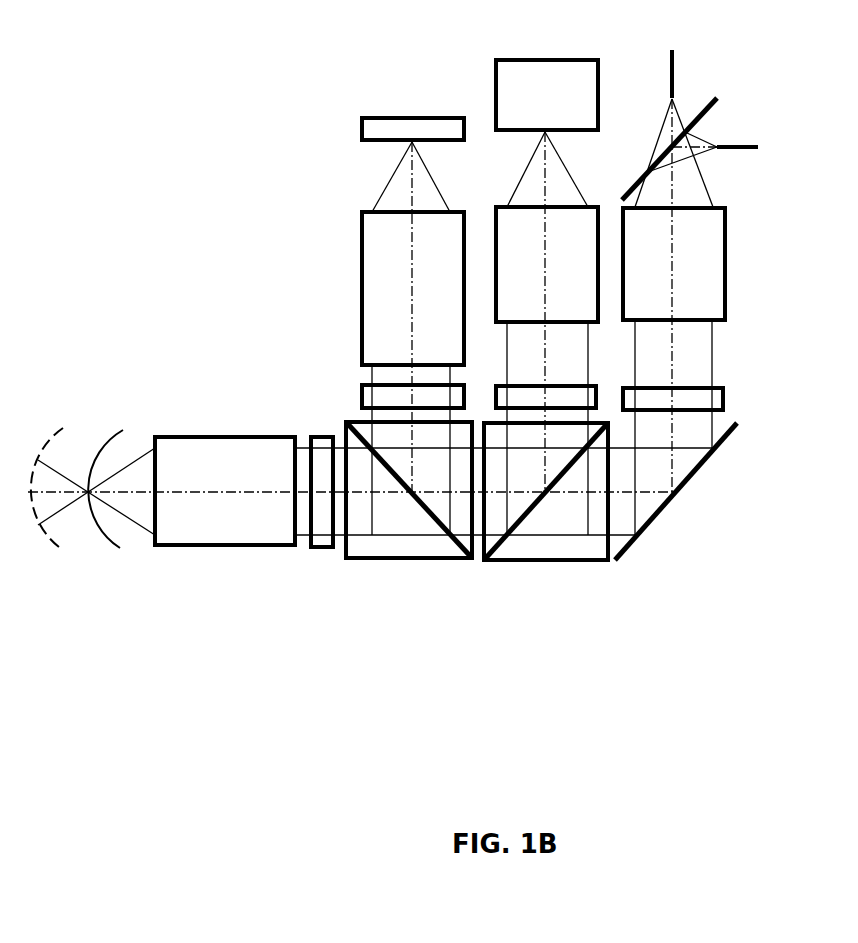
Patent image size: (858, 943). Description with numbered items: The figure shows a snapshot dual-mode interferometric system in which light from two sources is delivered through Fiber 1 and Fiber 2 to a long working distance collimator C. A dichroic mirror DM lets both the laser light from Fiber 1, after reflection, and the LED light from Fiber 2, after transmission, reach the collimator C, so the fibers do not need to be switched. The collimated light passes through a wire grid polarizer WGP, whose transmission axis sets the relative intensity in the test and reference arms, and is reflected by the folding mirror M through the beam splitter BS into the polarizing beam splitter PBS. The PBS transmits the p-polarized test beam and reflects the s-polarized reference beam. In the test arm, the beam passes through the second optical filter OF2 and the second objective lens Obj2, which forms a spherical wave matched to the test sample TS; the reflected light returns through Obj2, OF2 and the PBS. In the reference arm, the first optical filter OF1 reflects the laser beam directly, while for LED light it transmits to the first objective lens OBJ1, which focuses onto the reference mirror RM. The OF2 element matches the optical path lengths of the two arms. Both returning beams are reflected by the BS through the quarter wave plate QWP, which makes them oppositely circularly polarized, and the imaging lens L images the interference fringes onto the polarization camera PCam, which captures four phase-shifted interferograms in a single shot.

The test sample TS is at (77, 505).
The second objective lens Obj2 is at (225, 510).
The second optical filter OF2 is at (320, 510).
The polarizing beam splitter PBS is at (409, 507).
The beam splitter BS is at (546, 509).
The folding mirror M is at (676, 491).
The first optical filter OF1 is at (388, 400).
The first objective lens OBJ1 is at (382, 288).
The reference mirror RM is at (413, 113).
The polarization camera PCam is at (547, 83).
The imaging lens L is at (547, 264).
The quarter wave plate QWP is at (556, 375).
The collimator C is at (674, 264).
The wire grid polarizer WGP is at (703, 400).
The dichroic mirror DM is at (689, 139).
The second optical fiber Fiber 2 is at (679, 57).
The first optical fiber Fiber 1 is at (780, 151).